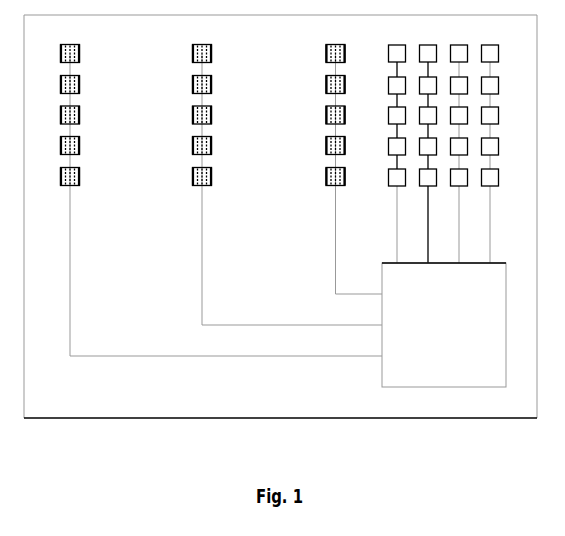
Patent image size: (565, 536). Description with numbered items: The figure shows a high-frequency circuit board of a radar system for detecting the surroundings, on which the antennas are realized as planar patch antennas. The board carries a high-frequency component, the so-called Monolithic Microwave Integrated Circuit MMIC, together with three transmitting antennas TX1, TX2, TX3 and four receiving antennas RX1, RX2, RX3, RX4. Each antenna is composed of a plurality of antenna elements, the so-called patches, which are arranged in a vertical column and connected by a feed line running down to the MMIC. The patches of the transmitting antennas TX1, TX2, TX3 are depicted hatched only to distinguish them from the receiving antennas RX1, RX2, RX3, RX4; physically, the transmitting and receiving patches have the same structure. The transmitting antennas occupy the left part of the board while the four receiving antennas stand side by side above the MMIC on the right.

The transmitting antenna TX1 is at (219, 190).
The transmitting antenna TX2 is at (284, 175).
The transmitting antenna TX3 is at (350, 160).
The receiving antenna RX1 is at (391, 144).
The receiving antenna RX2 is at (427, 144).
The receiving antenna RX3 is at (463, 144).
The receiving antenna RX4 is at (498, 144).
The Monolithic Microwave Integrated Circuit MMIC is at (444, 325).